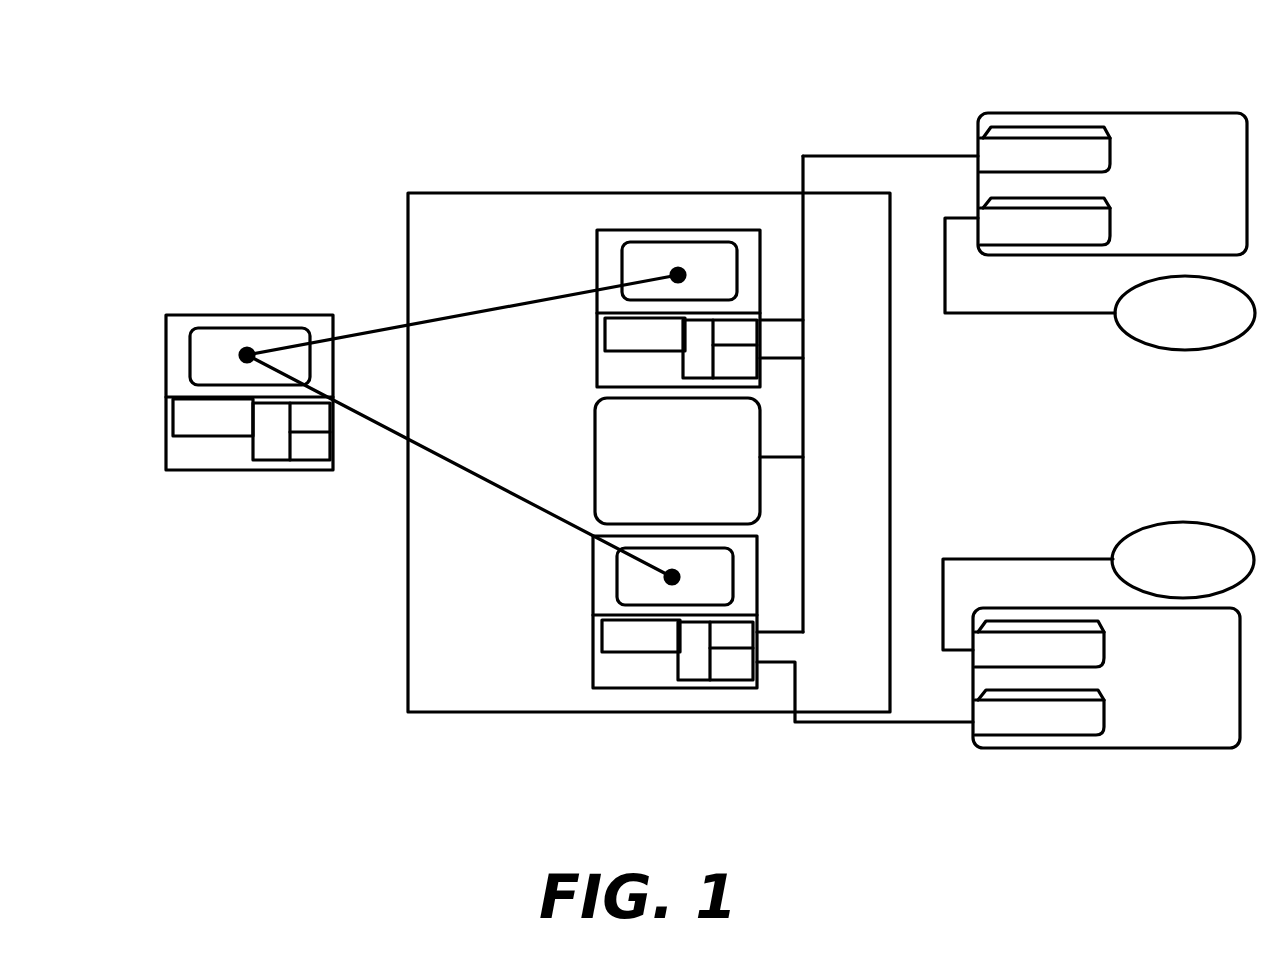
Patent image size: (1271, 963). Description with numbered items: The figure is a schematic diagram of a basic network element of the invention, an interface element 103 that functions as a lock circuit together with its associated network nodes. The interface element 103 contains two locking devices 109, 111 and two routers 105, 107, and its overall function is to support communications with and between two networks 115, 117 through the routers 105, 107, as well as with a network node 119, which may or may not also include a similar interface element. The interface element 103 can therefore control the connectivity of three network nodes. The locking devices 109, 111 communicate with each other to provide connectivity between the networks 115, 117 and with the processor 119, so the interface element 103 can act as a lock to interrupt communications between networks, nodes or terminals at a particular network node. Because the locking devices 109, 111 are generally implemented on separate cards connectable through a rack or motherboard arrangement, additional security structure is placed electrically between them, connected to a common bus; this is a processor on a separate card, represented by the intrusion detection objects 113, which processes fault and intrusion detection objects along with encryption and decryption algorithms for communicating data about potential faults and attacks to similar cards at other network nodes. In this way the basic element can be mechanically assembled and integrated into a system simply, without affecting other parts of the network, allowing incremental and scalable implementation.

The interface element 103 is at (408, 670).
The router 105 is at (1040, 118).
The router 107 is at (1010, 722).
The locking device 109 is at (597, 250).
The locking device 111 is at (593, 578).
The processor card for intrusion detection objects 113 is at (760, 500).
The network 115 is at (1157, 553).
The network 117 is at (1184, 323).
The network node 119 is at (166, 440).